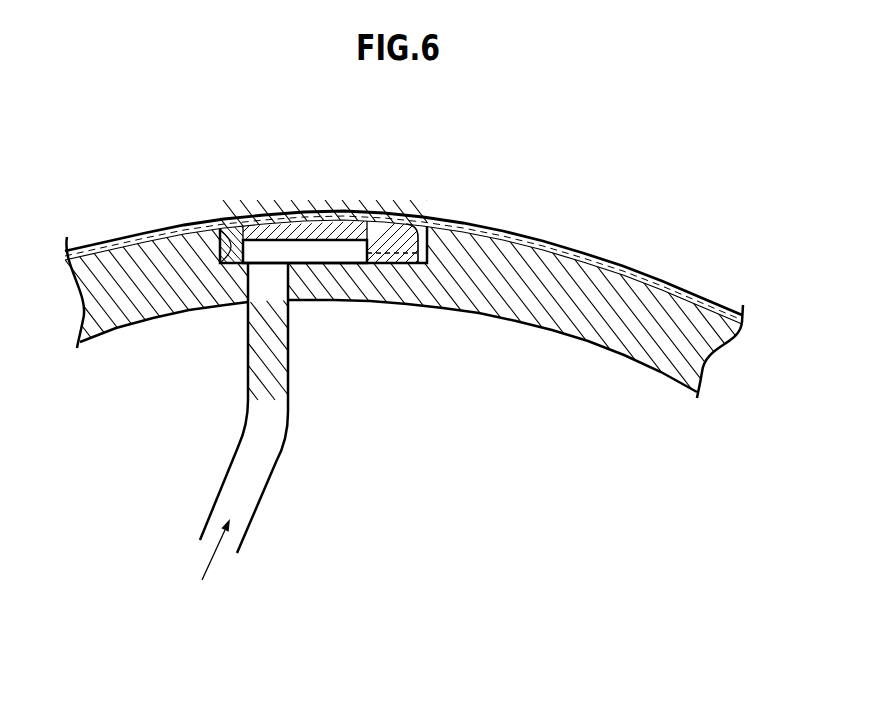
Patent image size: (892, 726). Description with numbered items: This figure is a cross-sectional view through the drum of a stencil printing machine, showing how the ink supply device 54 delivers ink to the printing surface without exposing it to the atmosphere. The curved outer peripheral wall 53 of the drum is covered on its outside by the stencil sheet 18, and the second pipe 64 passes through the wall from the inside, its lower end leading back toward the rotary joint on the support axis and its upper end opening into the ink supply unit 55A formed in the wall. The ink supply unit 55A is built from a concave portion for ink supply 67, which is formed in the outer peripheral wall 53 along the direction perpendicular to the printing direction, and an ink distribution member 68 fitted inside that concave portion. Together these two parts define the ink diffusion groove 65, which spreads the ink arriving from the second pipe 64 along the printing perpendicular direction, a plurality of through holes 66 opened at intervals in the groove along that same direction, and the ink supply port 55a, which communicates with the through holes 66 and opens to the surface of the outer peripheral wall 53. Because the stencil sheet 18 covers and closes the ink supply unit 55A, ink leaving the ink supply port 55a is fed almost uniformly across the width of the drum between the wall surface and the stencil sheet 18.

The stencil sheet 18 is at (553, 238).
The outer peripheral wall 53 is at (610, 292).
The ink supply device 54 is at (231, 377).
The ink supply unit 55A is at (430, 188).
The ink supply port 55a is at (425, 236).
The second pipe 64 is at (280, 417).
The ink diffusion groove 65 is at (326, 252).
The through holes 66 is at (384, 253).
The concave portion for ink supply 67 is at (226, 225).
The ink distribution member 68 is at (271, 227).